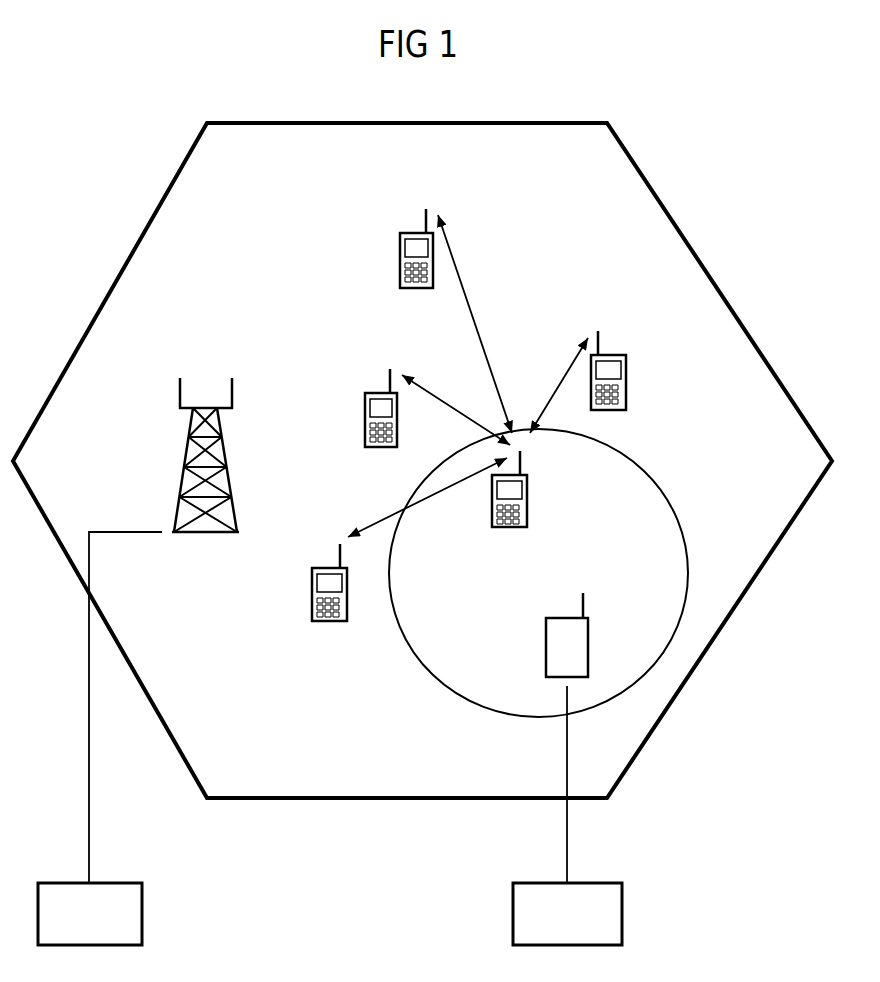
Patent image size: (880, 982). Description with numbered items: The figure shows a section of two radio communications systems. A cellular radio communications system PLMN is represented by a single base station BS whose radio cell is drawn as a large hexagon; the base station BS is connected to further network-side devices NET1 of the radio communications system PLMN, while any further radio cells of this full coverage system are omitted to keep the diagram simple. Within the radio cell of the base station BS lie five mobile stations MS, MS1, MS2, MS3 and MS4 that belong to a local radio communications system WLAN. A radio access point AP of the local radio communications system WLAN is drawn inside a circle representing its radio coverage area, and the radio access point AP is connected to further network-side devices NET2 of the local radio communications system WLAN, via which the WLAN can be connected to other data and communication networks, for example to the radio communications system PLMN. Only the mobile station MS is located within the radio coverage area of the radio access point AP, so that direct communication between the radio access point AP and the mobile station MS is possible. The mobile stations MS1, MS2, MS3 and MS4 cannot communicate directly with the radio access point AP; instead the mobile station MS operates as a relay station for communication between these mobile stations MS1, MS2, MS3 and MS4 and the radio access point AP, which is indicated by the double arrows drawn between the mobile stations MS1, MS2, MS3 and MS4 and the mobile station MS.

The cellular radio communications system PLMN is at (130, 615).
The base station BS is at (191, 455).
The network-side devices NET1 is at (90, 914).
The network-side devices NET2 is at (567, 914).
The local radio communications system WLAN is at (615, 702).
The radio access point AP is at (567, 635).
The mobile station MS is at (468, 376).
The mobile station MS1 is at (331, 599).
The mobile station MS2 is at (352, 408).
The mobile station MS3 is at (637, 370).
The mobile station MS4 is at (389, 248).